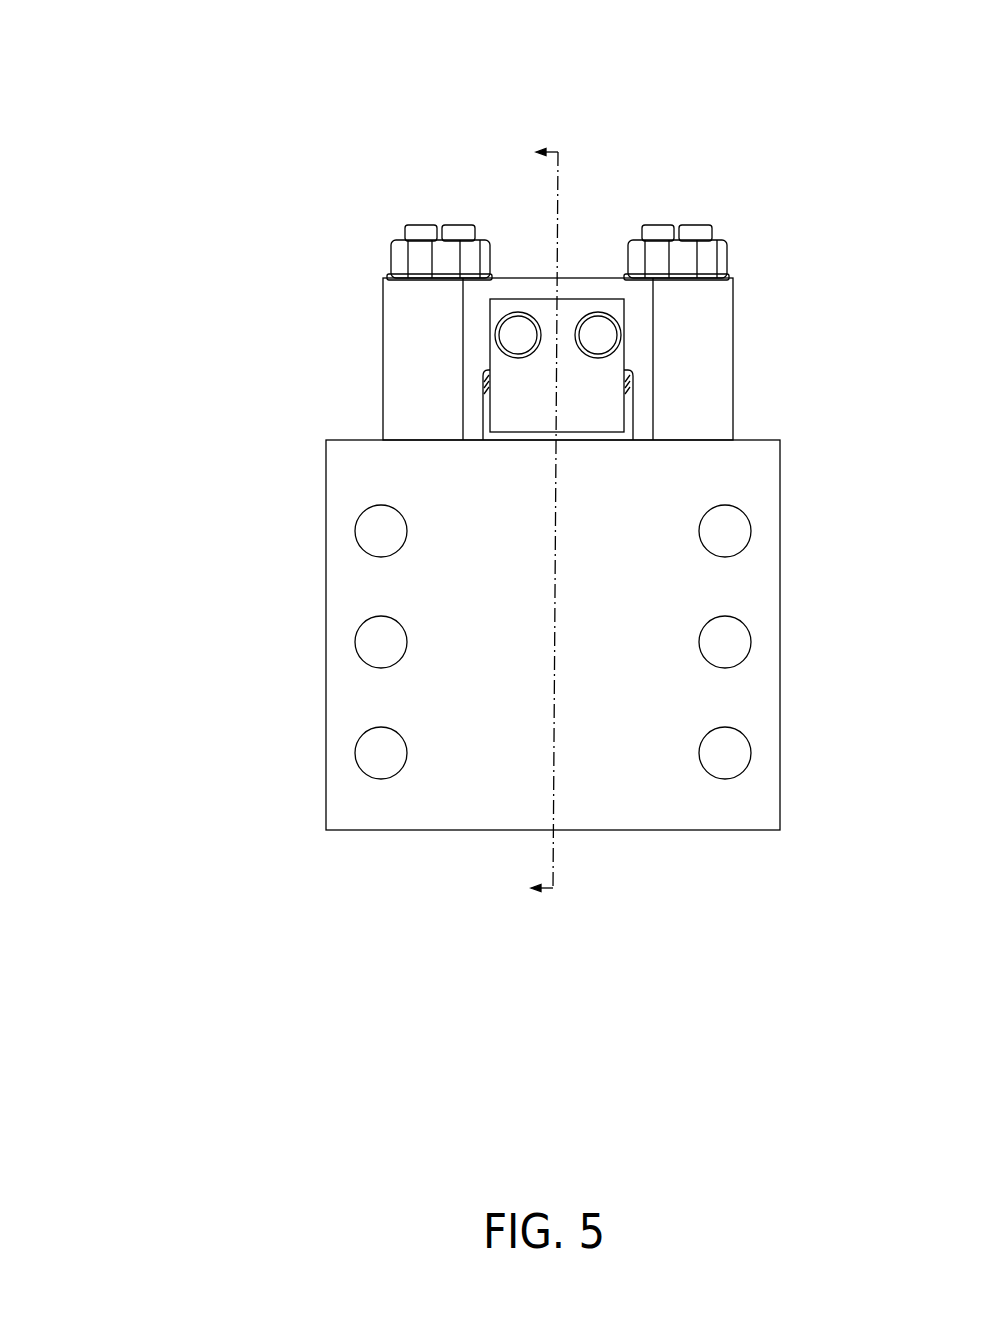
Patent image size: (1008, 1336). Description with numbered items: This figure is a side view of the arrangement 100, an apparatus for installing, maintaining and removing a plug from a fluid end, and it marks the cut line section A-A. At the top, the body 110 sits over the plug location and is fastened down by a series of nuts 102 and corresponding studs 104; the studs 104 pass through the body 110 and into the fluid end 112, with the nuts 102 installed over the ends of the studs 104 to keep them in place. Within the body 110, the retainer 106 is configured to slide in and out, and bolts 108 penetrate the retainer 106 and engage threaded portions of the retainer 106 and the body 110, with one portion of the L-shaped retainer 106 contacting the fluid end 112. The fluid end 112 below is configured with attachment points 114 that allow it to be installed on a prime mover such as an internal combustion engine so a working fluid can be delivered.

The apparatus 100 is at (464, 538).
The nuts 102 is at (393, 267).
The studs 104 is at (408, 223).
The retainer 106 is at (508, 393).
The bolts 108 is at (505, 334).
The body 110 is at (722, 340).
The fluid end 112 is at (618, 820).
The attachment points 114 is at (367, 764).